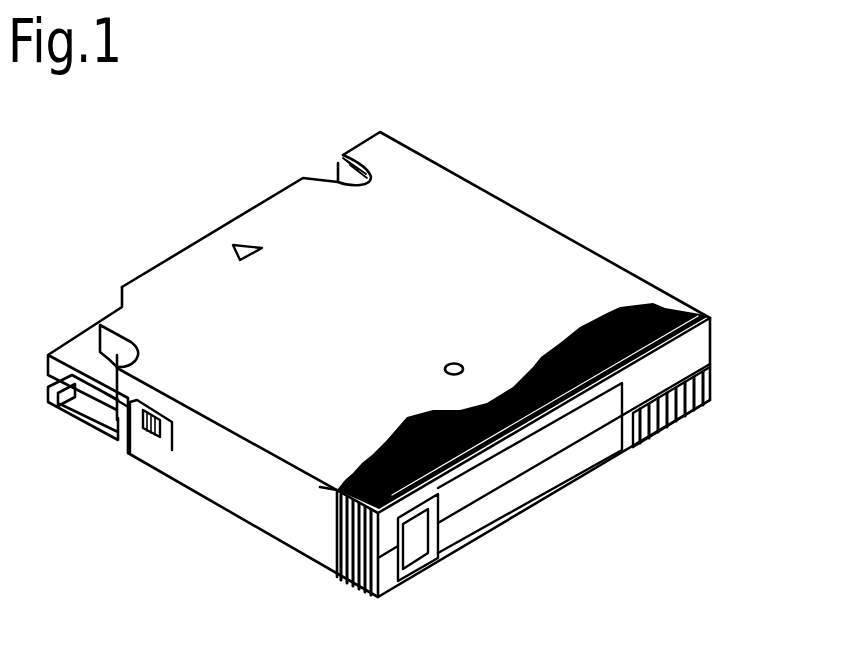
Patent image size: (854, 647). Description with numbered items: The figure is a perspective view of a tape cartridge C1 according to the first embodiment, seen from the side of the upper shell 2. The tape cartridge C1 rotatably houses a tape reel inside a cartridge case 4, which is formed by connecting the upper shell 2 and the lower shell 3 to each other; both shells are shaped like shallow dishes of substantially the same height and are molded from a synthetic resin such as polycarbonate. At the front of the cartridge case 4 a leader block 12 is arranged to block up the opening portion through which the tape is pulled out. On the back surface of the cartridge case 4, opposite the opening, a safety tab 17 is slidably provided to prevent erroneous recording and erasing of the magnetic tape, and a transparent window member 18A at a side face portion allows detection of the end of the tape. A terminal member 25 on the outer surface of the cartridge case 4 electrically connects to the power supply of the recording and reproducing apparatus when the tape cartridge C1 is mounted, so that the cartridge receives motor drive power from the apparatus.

The tape cartridge C1 is at (166, 186).
The upper shell 2 is at (574, 238).
The lower shell 3 is at (712, 380).
The cartridge case 4 is at (667, 190).
The leader block 12 is at (336, 174).
The safety tab 17 is at (420, 538).
The transparent window member 18A is at (148, 430).
The terminal member 25 is at (697, 416).